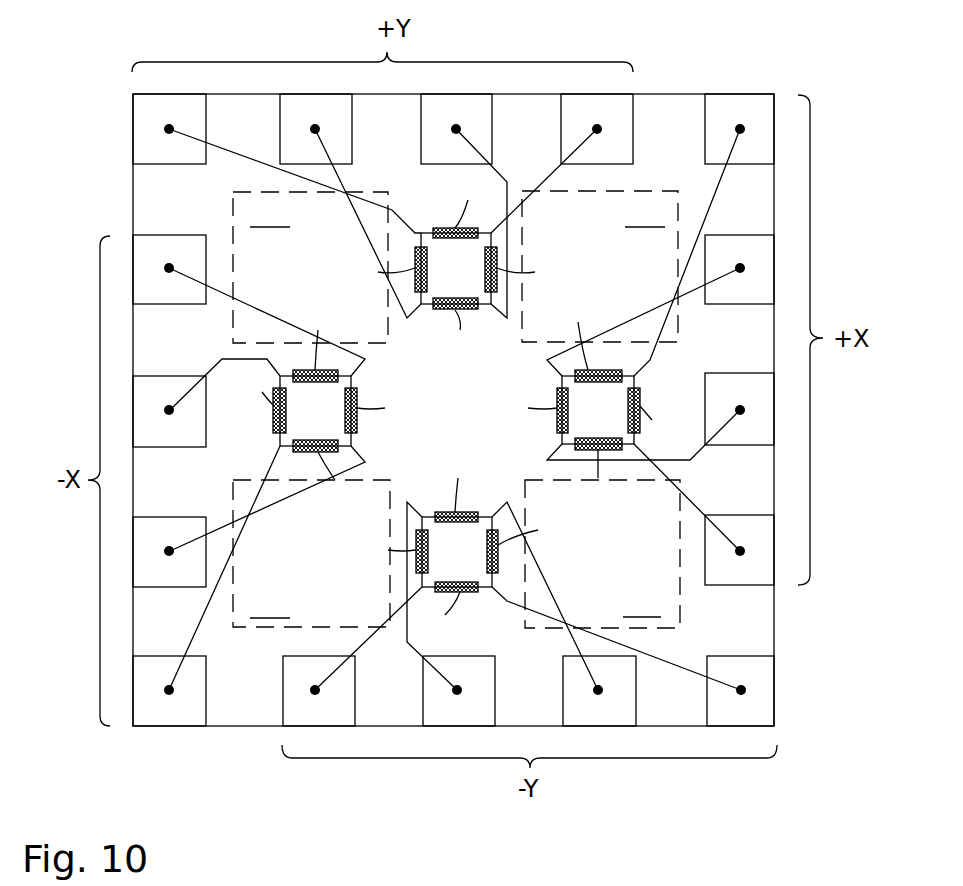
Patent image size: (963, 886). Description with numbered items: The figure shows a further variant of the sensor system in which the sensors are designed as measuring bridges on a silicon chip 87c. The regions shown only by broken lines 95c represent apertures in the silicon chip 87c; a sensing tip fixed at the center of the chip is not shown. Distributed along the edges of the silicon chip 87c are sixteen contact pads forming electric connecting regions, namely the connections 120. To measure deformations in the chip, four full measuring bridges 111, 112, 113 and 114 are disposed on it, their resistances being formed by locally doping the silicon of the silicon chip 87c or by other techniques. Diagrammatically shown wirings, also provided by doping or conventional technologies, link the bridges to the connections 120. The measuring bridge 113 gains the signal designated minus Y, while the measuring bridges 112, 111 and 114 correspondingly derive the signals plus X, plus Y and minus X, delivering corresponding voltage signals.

The silicon chip 87c is at (675, 95).
The sensing regions 95c is at (456, 409).
The measuring bridge 111 is at (430, 211).
The measuring bridge 112 is at (660, 388).
The measuring bridge 113 is at (482, 611).
The measuring bridge 114 is at (252, 434).
The connections 120 is at (158, 713).